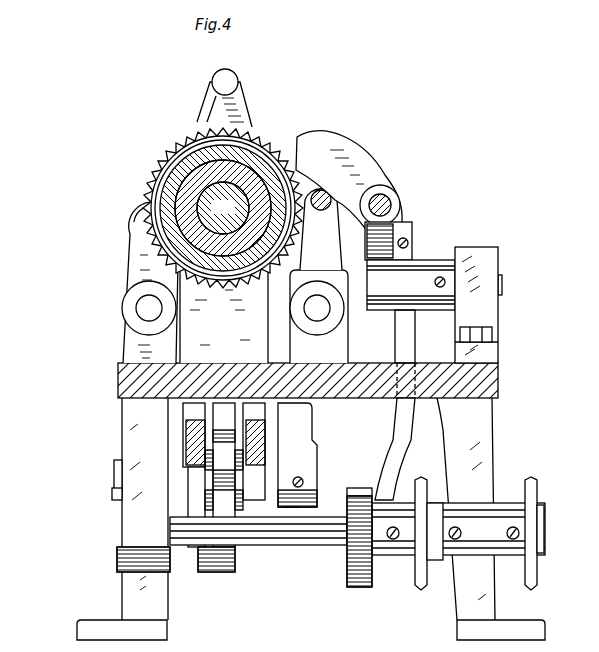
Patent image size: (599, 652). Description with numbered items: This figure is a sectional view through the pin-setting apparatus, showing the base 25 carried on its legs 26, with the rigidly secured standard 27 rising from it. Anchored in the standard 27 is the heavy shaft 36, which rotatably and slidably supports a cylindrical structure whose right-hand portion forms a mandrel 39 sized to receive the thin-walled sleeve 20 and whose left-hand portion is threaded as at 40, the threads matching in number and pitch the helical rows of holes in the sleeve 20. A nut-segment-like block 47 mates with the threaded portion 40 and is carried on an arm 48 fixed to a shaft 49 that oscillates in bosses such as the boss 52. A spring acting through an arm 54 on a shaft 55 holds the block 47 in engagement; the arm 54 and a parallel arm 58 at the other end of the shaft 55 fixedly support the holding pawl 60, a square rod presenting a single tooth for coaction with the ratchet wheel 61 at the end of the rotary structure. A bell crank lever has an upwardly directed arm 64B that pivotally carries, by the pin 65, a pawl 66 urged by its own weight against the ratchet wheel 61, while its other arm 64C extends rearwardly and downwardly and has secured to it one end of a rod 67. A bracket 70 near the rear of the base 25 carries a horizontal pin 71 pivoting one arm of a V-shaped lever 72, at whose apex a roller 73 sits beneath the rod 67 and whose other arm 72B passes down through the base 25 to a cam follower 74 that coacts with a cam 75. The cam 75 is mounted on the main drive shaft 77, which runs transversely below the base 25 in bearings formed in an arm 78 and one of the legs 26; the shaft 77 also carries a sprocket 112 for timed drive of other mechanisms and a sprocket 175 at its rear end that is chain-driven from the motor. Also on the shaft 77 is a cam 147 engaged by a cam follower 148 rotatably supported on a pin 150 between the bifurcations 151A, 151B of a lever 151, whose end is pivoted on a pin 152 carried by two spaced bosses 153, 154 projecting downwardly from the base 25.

The sleeve element 20 is at (153, 223).
The base 25 is at (492, 382).
The legs 26 is at (487, 434).
The standard 27 is at (224, 314).
The shaft 36 is at (223, 208).
The mandrel 39 is at (172, 160).
The threaded portion 40 is at (156, 168).
The block 47 is at (155, 182).
The arm 48 is at (138, 240).
The shaft 49 is at (148, 307).
The boss 52 is at (126, 336).
The arm 54 is at (343, 208).
The shaft 55 is at (320, 320).
The arm 58 is at (323, 283).
The holding pawl 60 is at (322, 190).
The ratchet wheel 61 is at (254, 134).
The upwardly directed arm 64B is at (240, 97).
The other arm 64C is at (357, 141).
The pin 65 is at (230, 82).
The pawl 66 is at (210, 97).
The rod 67 is at (392, 203).
The bracket 70 is at (490, 322).
The horizontal pin 71 is at (367, 303).
The V-shaped lever 72 is at (425, 256).
The other arm 72B is at (392, 443).
The roller 73 is at (388, 233).
The cam follower 74 is at (353, 488).
The cam 75 is at (350, 580).
The shaft 77 is at (300, 545).
The arm 78 is at (132, 530).
The sprocket 112 is at (420, 587).
The cam 147 is at (225, 510).
The cam follower 148 is at (222, 403).
The pin 150 is at (267, 430).
The lever 151 is at (190, 476).
The bifurcation 151A is at (188, 433).
The bifurcation 151B is at (267, 440).
The pin 152 is at (112, 485).
The boss 153 is at (120, 455).
The boss 154 is at (290, 505).
The sprocket 175 is at (540, 565).